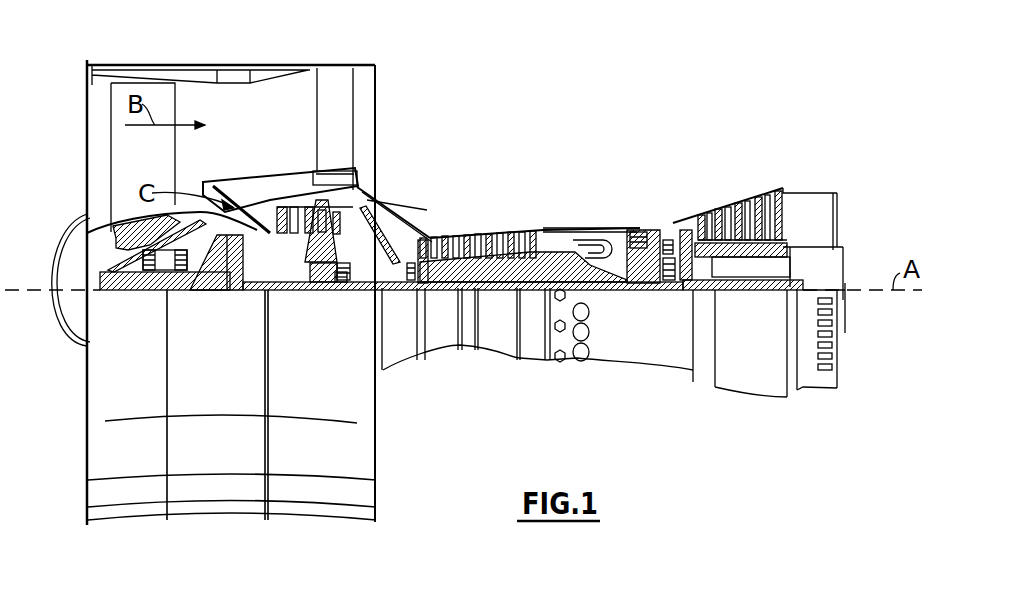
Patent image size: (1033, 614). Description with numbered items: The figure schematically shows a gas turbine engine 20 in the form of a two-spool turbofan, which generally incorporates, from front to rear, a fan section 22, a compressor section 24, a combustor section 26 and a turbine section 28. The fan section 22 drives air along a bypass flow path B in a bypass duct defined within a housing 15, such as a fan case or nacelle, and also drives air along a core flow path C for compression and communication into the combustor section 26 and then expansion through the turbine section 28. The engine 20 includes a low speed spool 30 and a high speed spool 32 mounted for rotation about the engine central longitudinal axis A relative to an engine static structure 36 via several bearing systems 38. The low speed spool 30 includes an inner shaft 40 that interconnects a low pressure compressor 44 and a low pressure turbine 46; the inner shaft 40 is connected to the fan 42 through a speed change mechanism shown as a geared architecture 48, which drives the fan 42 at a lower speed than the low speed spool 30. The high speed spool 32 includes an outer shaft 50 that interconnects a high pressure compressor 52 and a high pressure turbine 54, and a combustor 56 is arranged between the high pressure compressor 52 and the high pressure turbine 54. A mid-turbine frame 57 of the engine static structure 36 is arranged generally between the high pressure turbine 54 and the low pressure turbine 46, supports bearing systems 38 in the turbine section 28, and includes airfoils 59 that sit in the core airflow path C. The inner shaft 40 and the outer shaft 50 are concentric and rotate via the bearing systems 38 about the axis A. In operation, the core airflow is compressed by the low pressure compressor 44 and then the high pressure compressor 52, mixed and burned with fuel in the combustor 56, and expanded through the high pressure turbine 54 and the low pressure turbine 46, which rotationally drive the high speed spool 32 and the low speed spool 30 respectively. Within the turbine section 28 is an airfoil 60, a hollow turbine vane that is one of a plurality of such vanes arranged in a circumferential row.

The housing 15 is at (230, 72).
The gas turbine engine 20 is at (600, 101).
The fan section 22 is at (176, 57).
The compressor section 24 is at (416, 216).
The combustor section 26 is at (581, 206).
The turbine section 28 is at (721, 166).
The low speed spool 30 is at (500, 295).
The high speed spool 32 is at (537, 233).
The engine static structure 36 is at (533, 358).
The bearing systems 38 is at (342, 280).
The inner shaft 40 is at (392, 292).
The fan 42 is at (156, 169).
The low pressure compressor 44 is at (357, 167).
The low pressure turbine 46 is at (745, 197).
The geared architecture 48 is at (233, 277).
The outer shaft 50 is at (597, 297).
The high pressure compressor 52 is at (487, 230).
The high pressure turbine 54 is at (643, 223).
The combustor 56 is at (590, 242).
The mid-turbine frame 57 is at (682, 214).
The airfoils 59 is at (690, 242).
The airfoil 60 is at (645, 233).